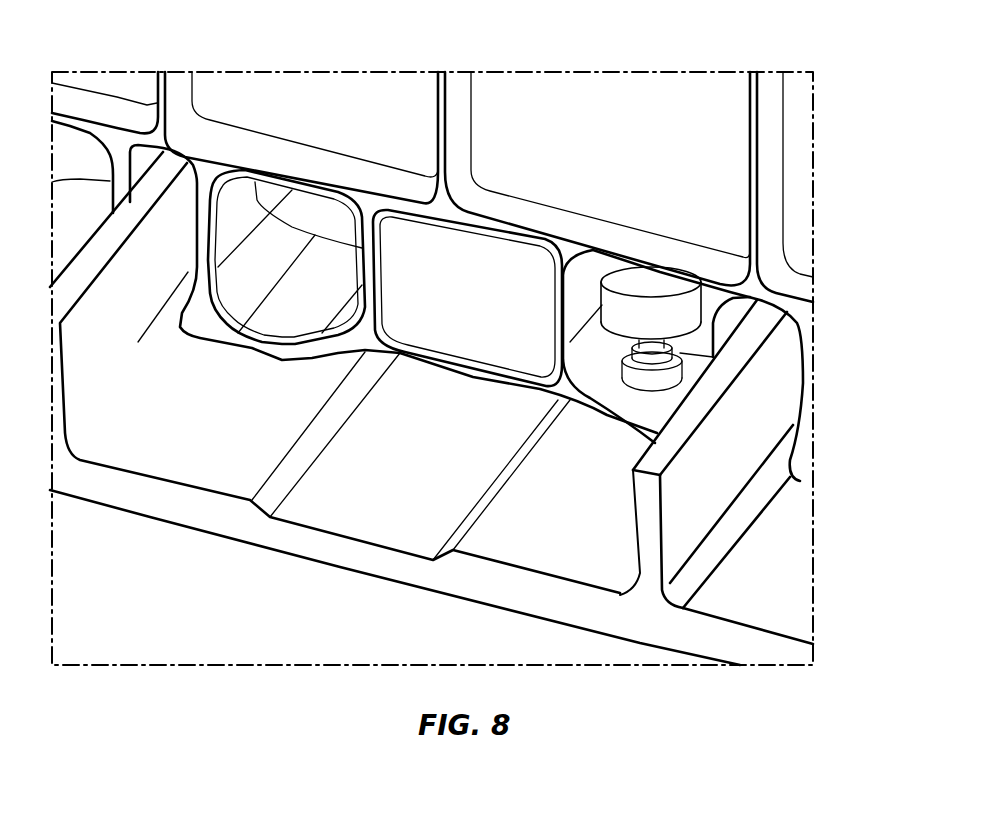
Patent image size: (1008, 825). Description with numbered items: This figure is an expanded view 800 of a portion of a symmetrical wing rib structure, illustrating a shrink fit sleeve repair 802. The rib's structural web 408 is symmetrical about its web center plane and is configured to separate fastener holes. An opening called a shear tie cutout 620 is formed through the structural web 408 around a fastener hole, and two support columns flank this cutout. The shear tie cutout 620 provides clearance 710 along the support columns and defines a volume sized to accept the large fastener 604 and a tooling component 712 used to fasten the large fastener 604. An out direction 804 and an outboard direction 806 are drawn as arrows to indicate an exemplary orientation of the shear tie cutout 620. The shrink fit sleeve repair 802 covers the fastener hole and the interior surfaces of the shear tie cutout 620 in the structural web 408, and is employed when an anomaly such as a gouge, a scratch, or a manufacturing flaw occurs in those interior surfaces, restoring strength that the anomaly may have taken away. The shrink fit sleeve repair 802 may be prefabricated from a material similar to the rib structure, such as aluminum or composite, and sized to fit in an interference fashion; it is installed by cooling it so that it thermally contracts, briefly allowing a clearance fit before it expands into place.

The expanded view 800 is at (566, 26).
The shrink fit sleeve repair 802 is at (288, 318).
The large fastener 604 is at (650, 362).
The shear tie cutout 620 is at (310, 205).
The structural web 408 is at (473, 310).
The clearance 710 is at (704, 343).
The tooling component 712 is at (640, 297).
The out direction 804 is at (878, 365).
The outboard direction 806 is at (878, 365).